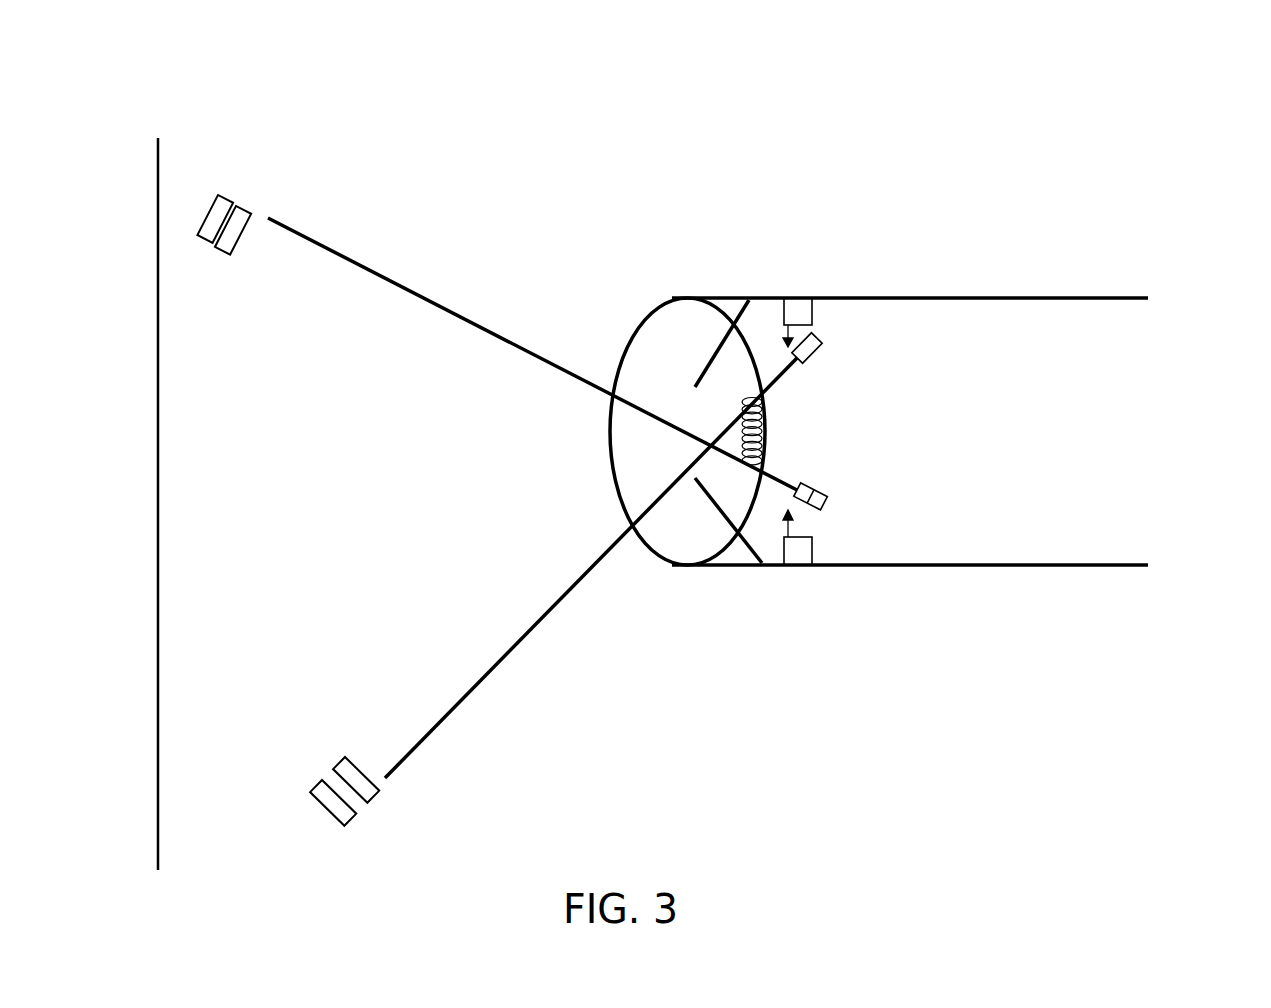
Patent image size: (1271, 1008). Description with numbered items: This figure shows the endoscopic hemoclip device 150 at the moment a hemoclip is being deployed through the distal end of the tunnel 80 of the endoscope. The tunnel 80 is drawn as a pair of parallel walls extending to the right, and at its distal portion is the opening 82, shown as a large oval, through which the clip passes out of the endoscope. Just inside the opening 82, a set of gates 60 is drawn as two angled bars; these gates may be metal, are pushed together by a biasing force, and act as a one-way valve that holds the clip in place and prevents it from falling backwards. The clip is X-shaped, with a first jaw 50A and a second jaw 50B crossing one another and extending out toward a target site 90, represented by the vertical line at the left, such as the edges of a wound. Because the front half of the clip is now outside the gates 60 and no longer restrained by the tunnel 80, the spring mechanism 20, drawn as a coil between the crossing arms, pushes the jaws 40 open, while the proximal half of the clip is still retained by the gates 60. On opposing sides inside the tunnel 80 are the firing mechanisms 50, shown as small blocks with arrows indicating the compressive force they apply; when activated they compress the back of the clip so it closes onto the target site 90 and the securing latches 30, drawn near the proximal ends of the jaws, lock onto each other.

The endoscopic hemoclip device 150 is at (655, 47).
The target site 90 is at (160, 410).
The tunnel 80 is at (1120, 298).
The opening 82 is at (610, 465).
The set of gates 60 is at (718, 345).
The spring mechanism 20 is at (765, 402).
The firing mechanism 50 is at (812, 310).
The securing latches 30 is at (822, 337).
The jaws 40 is at (255, 240).
The first jaw 50A is at (452, 313).
The second jaw 50B is at (785, 370).